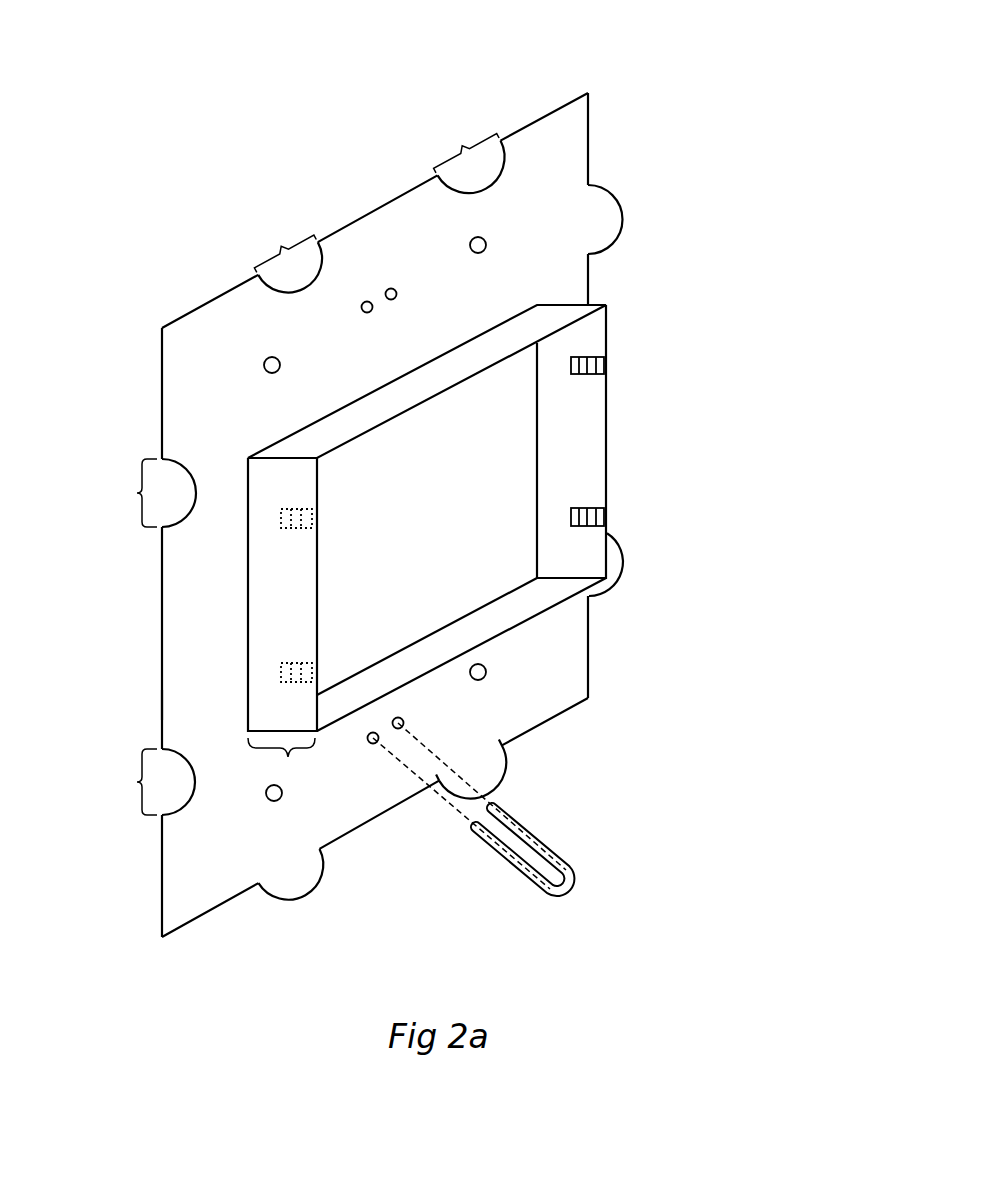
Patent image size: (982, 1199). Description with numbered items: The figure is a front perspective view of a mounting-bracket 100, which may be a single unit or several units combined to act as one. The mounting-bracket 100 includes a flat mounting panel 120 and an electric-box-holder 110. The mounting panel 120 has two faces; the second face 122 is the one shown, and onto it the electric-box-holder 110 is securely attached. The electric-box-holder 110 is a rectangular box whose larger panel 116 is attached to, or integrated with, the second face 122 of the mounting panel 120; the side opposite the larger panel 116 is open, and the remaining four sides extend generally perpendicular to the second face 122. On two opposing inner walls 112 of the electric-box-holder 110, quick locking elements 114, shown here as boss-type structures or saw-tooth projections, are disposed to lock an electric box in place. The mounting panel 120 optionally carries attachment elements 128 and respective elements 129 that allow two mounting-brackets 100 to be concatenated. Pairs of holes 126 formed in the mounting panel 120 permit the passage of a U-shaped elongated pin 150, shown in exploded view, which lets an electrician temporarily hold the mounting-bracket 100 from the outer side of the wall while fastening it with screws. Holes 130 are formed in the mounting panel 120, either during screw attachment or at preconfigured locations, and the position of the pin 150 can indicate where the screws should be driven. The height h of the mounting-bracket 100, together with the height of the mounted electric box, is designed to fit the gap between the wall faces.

The mounting-bracket 100 is at (352, 117).
The electric-box-holder 110 is at (607, 453).
The inner walls 112 is at (550, 593).
The quick locking elements 114 is at (606, 365).
The larger panel 116 is at (470, 568).
The mounting panel 120 is at (212, 300).
The second face 122 is at (188, 693).
The holes 126 is at (390, 289).
The attachment elements 128 is at (281, 247).
The respective elements 129 is at (617, 214).
The holes 130 is at (486, 241).
The U shaped elongated pin 150 is at (573, 892).